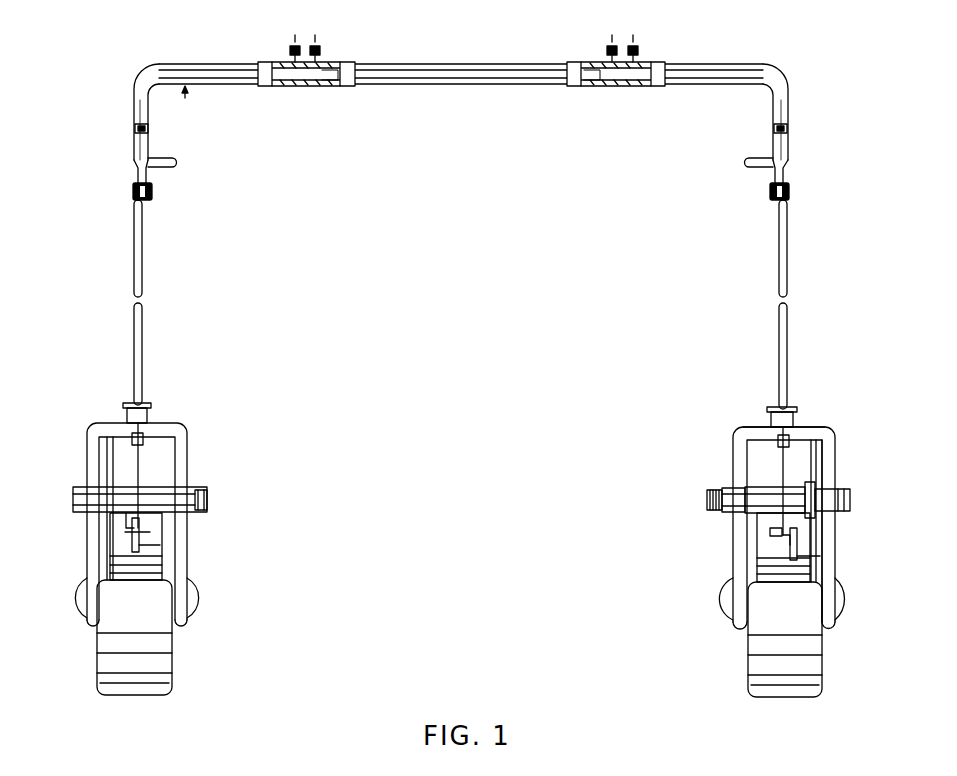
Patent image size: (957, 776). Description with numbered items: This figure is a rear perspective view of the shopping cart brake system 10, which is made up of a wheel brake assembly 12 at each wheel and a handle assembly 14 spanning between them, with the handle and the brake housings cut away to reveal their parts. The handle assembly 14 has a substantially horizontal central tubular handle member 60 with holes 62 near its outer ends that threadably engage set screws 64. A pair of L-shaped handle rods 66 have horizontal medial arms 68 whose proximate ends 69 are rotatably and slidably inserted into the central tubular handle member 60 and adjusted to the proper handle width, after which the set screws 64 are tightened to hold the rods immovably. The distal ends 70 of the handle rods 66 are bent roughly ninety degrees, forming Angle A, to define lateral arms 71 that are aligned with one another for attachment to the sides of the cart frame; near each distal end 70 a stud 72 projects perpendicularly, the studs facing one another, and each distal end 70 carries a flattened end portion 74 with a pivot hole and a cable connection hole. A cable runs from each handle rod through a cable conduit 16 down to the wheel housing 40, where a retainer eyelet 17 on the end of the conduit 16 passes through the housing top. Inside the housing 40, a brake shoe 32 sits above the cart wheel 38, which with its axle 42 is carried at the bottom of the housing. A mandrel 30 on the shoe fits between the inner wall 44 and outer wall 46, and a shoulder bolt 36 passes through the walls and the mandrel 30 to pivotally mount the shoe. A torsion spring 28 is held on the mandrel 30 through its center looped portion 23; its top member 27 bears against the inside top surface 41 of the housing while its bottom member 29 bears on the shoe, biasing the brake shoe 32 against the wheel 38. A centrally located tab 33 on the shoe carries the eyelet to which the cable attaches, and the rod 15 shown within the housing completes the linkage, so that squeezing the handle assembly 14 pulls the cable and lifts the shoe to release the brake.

The shopping cart brake system 10 is at (794, 265).
The wheel brake assembly 12 is at (566, 513).
The handle assembly 14 is at (455, 132).
The inner actuating bar 15 is at (140, 458).
The cable conduit 16 is at (143, 322).
The retainer eyelet 17 is at (148, 410).
The center looped portion 23 is at (812, 500).
The top member 27 is at (818, 444).
The torsion spring 28 is at (818, 452).
The bottom member 29 is at (770, 535).
The mandrel 30 is at (150, 496).
The brake shoe 32 is at (150, 557).
The tab 33 is at (125, 535).
The shoulder bolt 36 is at (708, 498).
The cart wheel 38 is at (150, 668).
The wheel housing 40 is at (805, 424).
The inside top surface 41 is at (760, 440).
The axle 42 is at (725, 596).
The inner wall 44 is at (735, 468).
The outer wall 46 is at (828, 468).
The central tubular handle member 60 is at (486, 64).
The holes 62 is at (292, 62).
The set screws 64 is at (325, 48).
The L-shaped handle rods 66 is at (155, 68).
The medial arms 68 is at (230, 64).
The proximate ends 69 is at (320, 86).
The distal ends 70 is at (135, 159).
The lateral arms 71 is at (135, 134).
The stud 72 is at (176, 162).
The flattened end portion 74 is at (143, 196).
The Angle A is at (148, 118).